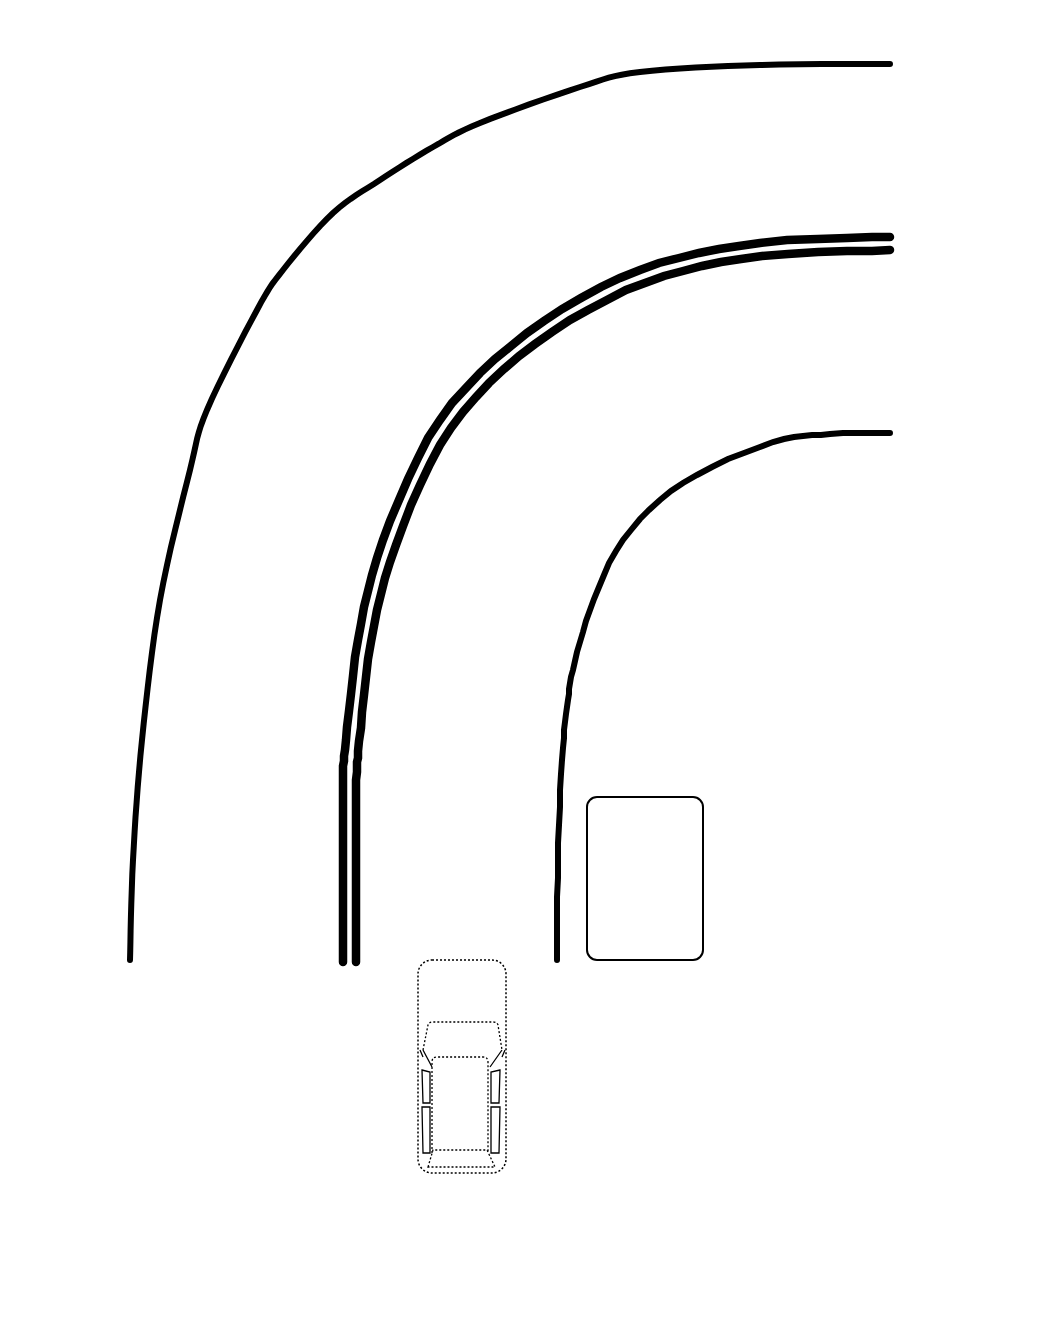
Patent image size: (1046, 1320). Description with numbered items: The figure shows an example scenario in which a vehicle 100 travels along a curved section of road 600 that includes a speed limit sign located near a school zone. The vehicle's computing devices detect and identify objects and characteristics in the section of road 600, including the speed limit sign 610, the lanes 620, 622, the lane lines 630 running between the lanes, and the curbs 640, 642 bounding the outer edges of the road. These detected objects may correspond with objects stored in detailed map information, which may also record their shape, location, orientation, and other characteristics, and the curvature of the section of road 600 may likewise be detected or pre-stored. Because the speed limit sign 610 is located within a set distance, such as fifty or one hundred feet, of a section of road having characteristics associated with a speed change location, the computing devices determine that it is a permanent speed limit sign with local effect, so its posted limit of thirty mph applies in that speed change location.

The vehicle 100 is at (453, 997).
The section of road 600 is at (118, 1138).
The speed limit sign 610 is at (697, 885).
The lane 620 is at (723, 696).
The lane 622 is at (475, 512).
The lane lines 630 is at (573, 303).
The curb 640 is at (575, 668).
The curb 642 is at (205, 412).